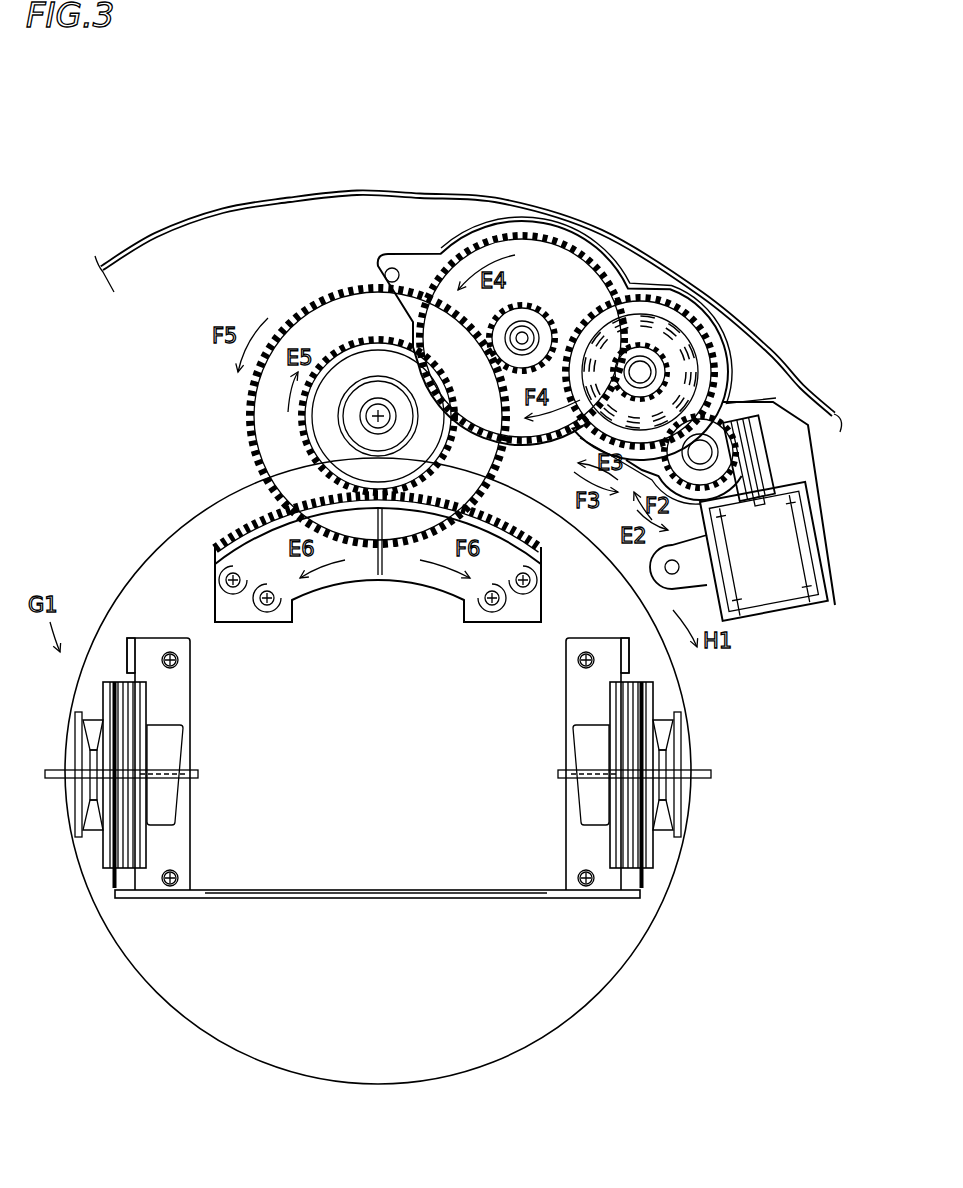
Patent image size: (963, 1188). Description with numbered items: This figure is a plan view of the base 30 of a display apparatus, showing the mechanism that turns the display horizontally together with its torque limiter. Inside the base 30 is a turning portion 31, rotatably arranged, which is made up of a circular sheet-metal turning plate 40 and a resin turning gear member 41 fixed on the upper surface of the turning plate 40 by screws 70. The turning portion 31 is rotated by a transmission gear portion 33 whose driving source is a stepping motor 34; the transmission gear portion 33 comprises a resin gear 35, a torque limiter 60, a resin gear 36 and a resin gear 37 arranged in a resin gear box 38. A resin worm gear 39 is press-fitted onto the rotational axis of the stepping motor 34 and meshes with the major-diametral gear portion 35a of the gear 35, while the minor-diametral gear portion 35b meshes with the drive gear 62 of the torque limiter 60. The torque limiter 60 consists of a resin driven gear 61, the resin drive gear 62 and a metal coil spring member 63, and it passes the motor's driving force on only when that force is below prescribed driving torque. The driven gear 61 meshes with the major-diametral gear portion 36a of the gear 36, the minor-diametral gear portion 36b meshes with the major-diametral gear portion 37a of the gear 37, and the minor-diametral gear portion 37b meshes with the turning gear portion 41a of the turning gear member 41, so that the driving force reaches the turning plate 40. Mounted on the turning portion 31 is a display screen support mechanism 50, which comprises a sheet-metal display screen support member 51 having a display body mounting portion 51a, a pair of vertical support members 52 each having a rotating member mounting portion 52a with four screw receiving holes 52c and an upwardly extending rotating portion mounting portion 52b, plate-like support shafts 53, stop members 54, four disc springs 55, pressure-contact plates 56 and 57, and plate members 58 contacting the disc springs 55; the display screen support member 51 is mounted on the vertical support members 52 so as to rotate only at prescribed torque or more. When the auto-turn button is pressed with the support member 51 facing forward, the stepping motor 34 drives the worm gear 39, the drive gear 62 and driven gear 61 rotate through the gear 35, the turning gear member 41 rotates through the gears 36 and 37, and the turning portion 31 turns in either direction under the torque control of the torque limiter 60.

The base 30 is at (186, 132).
The turning portion 31 is at (110, 550).
The transmission gear portion 33 is at (452, 228).
The stepping motor 34 is at (755, 598).
The gear 35 is at (750, 334).
The major-diametral gear portion 35a is at (732, 425).
The minor-diametral gear portion 35b is at (718, 418).
The gear 36 is at (527, 246).
The major-diametral gear portion 36a is at (584, 300).
The minor-diametral gear portion 36b is at (530, 306).
The gear 37 is at (378, 293).
The major-diametral gear portion 37a is at (348, 290).
The minor-diametral gear portion 37b is at (320, 357).
The gear box 38 is at (790, 620).
The worm gear 39 is at (770, 455).
The turning plate 40 is at (190, 547).
The turning gear member 41 is at (341, 462).
The turning gear portion 41a is at (273, 515).
The display screen support mechanism 50 is at (403, 853).
The display screen support member 51 is at (377, 1006).
The display body mounting portion 51a is at (530, 898).
The vertical support members 52 is at (387, 737).
The rotating member mounting portion 52a is at (175, 720).
The rotating portion mounting portion 52b is at (131, 640).
The screw receiving holes 52c is at (170, 652).
The support shafts 53 is at (75, 762).
The stop members 54 is at (147, 868).
The disc springs 55 is at (82, 842).
The pressure-contact plate 56 is at (120, 865).
The pressure-contact plate 57 is at (132, 868).
The plate members 58 is at (74, 845).
The torque limiter 60 is at (658, 288).
The driven gear 61 is at (641, 345).
The drive gear 62 is at (672, 307).
The spring member 63 is at (636, 318).
The screws 70 is at (233, 588).